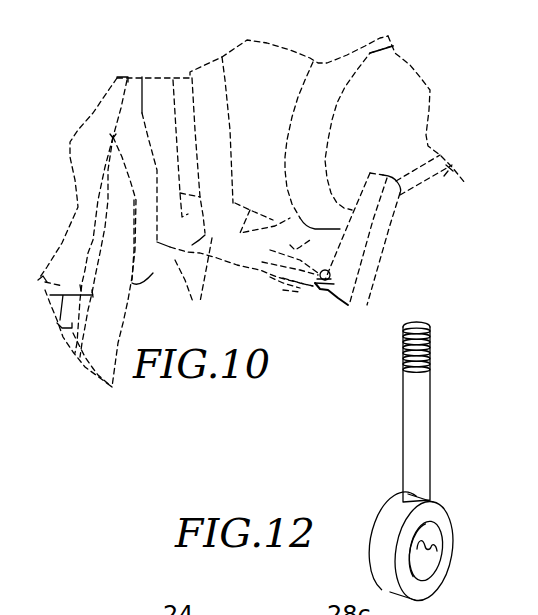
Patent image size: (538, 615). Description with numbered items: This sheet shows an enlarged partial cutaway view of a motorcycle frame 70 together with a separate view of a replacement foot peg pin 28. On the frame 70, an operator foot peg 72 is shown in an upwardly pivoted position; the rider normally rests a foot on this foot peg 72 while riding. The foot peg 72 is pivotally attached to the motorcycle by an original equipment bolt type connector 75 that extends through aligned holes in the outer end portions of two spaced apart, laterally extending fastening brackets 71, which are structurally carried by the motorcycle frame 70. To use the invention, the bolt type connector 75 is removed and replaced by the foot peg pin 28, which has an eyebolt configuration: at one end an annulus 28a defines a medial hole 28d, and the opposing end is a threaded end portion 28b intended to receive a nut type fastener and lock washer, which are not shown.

In FIG. 10, the motorcycle frame 70 is at (195, 287).
In FIG. 10, the fastening brackets 71 is at (281, 301).
In FIG. 10, the operator foot peg 72 is at (372, 258).
In FIG. 10, the bolt type connector 75 is at (353, 297).
In FIG. 12, the foot peg pin 28 is at (380, 437).
In FIG. 12, the annulus 28a is at (390, 532).
In FIG. 12, the threaded end portion 28b is at (425, 357).
In FIG. 12, the medial hole 28d is at (433, 547).